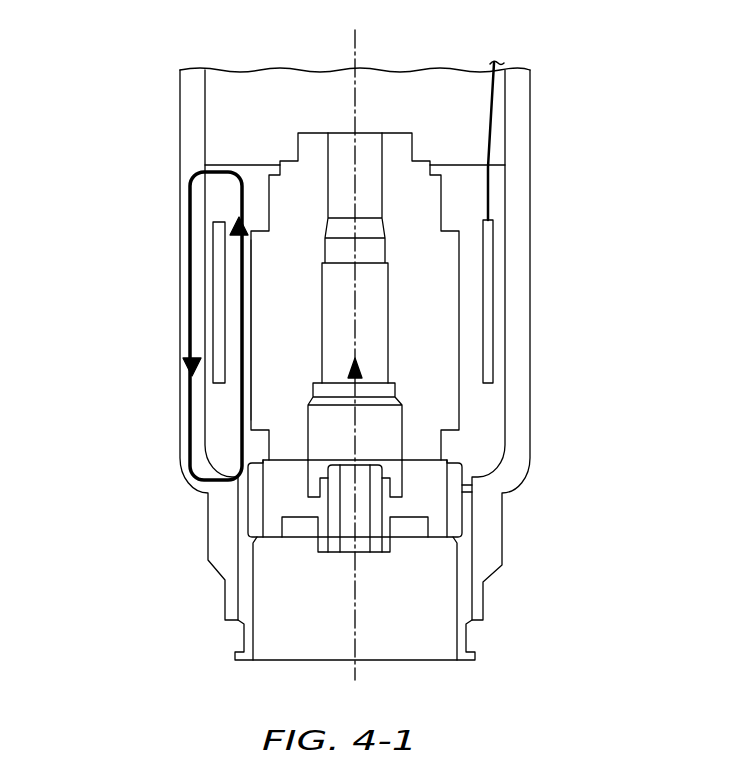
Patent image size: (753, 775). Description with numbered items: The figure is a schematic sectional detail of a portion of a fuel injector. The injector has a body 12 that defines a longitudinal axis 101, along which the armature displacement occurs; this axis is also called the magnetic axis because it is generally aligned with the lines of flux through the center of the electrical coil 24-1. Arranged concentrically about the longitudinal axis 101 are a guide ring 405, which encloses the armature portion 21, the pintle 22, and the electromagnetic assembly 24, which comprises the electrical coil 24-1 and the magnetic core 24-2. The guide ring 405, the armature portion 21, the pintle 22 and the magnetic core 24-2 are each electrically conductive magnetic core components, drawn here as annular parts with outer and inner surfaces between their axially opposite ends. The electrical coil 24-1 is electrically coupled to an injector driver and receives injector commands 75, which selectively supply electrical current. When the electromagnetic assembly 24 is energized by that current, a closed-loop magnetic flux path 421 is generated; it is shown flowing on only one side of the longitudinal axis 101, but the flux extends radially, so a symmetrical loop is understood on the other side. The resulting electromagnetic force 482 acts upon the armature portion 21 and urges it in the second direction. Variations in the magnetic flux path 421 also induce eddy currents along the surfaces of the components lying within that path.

The longitudinal axis 101 is at (352, 53).
The body 12 is at (520, 333).
The armature portion 21 is at (430, 497).
The pintle 22 is at (328, 212).
The electromagnetic assembly 24 is at (494, 259).
The electrical coil 24-1 is at (215, 283).
The magnetic core 24-2 is at (262, 331).
The injector commands 75 is at (490, 125).
The guide ring 405 is at (455, 523).
The magnetic flux path 421 is at (270, 428).
The electromagnetic force 482 is at (335, 420).